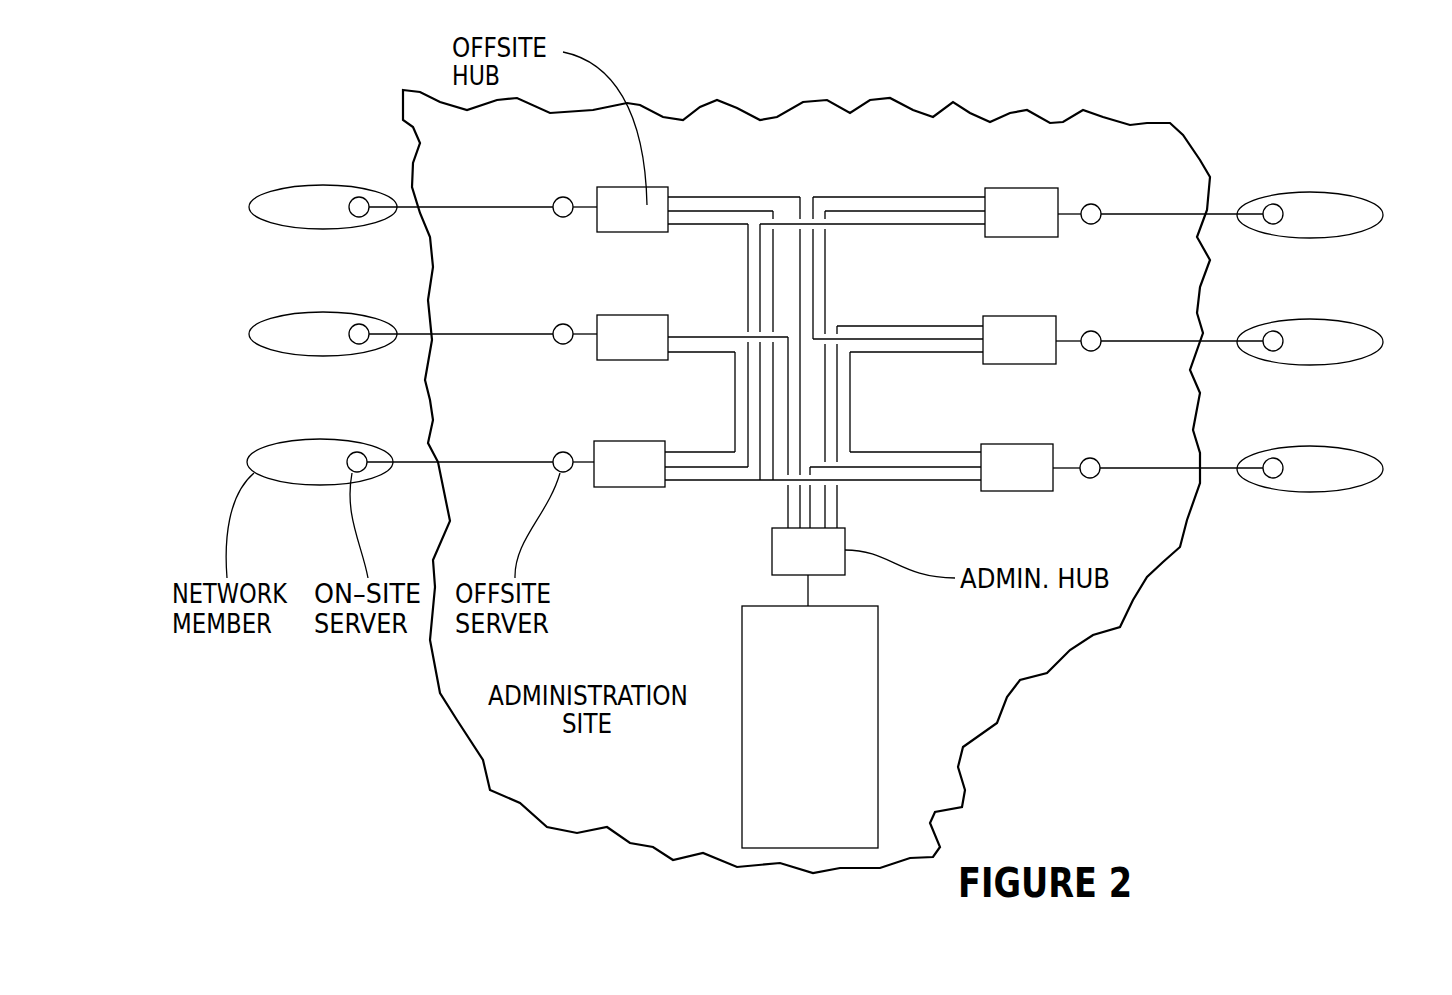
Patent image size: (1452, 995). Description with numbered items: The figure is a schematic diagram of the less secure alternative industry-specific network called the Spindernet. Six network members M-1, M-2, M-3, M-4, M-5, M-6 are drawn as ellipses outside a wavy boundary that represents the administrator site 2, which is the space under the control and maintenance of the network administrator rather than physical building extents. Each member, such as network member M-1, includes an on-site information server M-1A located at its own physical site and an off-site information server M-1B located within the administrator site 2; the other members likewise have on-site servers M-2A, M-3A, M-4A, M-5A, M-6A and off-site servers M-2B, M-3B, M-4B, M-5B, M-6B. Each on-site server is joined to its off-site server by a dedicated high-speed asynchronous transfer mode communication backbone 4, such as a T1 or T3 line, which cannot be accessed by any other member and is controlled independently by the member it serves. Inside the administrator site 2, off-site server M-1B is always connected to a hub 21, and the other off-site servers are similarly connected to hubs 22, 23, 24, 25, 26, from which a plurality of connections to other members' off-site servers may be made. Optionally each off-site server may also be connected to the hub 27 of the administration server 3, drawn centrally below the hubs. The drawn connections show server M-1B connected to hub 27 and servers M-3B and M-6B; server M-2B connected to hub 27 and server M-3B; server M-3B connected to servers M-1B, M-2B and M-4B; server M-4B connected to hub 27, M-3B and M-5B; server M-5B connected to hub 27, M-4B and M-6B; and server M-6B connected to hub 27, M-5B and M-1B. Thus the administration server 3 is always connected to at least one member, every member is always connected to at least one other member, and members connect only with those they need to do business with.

The administrator site 2 is at (734, 75).
The administration server 3 is at (810, 727).
The high-speed communication backbone 4 is at (470, 195).
The hub 21 is at (632, 225).
The hub 22 is at (632, 353).
The hub 23 is at (629, 480).
The hub 24 is at (1021, 227).
The hub 25 is at (1019, 356).
The hub 26 is at (1017, 484).
The administration hub 27 is at (808, 551).
The network member M-1 is at (239, 196).
The on-site information server M-1A is at (338, 195).
The off-site information server M-1B is at (542, 195).
The network member M-2 is at (239, 323).
The on-site information server M-2A is at (338, 322).
The off-site information server M-2B is at (542, 322).
The network member M-3 is at (239, 451).
The on-site information server M-3A is at (336, 450).
The off-site information server M-3B is at (542, 450).
The network member M-4 is at (1392, 202).
The on-site information server M-4A is at (1294, 202).
The off-site information server M-4B is at (1112, 202).
The network member M-5 is at (1392, 329).
The on-site information server M-5A is at (1294, 329).
The off-site information server M-5B is at (1112, 329).
The network member M-6 is at (1392, 456).
The on-site information server M-6A is at (1294, 456).
The off-site information server M-6B is at (1111, 456).